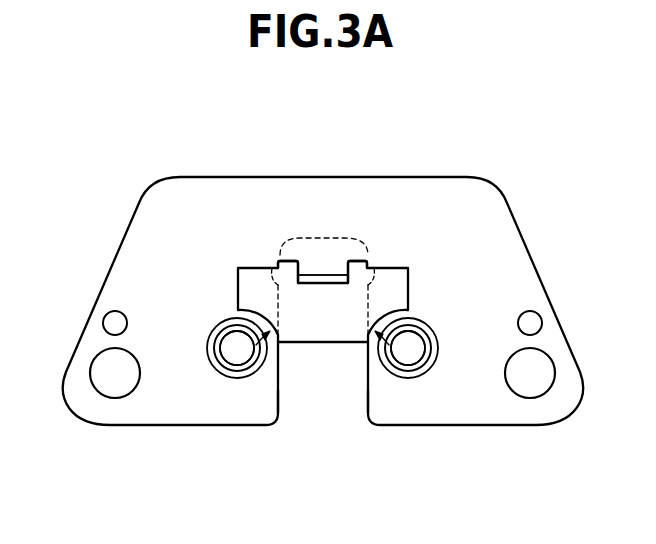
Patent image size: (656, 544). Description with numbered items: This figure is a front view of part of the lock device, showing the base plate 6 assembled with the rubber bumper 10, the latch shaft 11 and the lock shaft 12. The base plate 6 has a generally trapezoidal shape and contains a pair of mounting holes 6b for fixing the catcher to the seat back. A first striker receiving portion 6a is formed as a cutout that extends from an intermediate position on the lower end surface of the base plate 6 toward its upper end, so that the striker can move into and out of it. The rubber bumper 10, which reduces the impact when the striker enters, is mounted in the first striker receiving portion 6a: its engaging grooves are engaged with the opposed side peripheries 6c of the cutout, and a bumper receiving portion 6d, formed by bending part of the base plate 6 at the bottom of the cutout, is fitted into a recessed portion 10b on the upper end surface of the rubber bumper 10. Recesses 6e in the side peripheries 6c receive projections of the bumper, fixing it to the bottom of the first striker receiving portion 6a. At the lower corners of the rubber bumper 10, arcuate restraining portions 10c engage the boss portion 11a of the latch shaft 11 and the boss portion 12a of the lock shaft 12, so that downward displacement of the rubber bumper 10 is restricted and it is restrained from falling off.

The base plate 6 is at (197, 195).
The first striker receiving portion 6a is at (325, 357).
The mounting holes 6b is at (113, 377).
The opposed side peripheries 6c is at (281, 396).
The bumper receiving portion 6d is at (326, 283).
The recesses 6e is at (262, 282).
The rubber bumper 10 is at (350, 327).
The recessed portion 10b is at (315, 275).
The restraining portions 10c is at (252, 375).
The latch shaft 11 is at (408, 348).
The boss portion 11a is at (420, 325).
The lock shaft 12 is at (237, 348).
The boss portion 12a is at (222, 325).